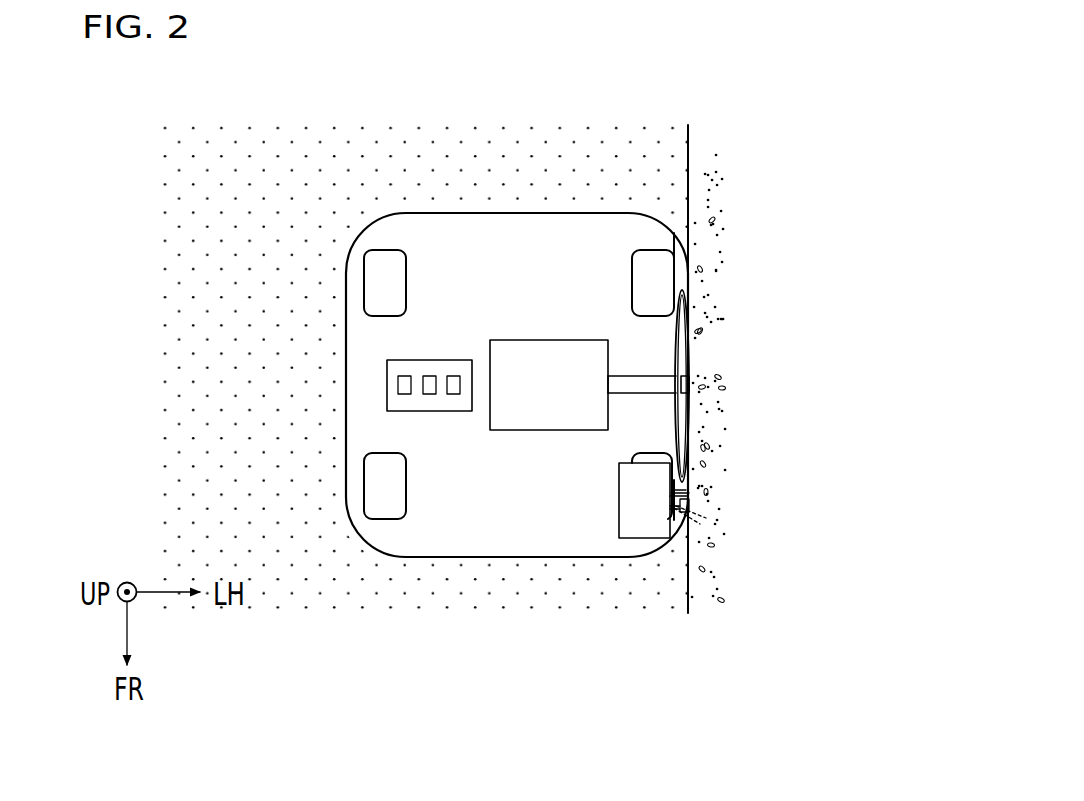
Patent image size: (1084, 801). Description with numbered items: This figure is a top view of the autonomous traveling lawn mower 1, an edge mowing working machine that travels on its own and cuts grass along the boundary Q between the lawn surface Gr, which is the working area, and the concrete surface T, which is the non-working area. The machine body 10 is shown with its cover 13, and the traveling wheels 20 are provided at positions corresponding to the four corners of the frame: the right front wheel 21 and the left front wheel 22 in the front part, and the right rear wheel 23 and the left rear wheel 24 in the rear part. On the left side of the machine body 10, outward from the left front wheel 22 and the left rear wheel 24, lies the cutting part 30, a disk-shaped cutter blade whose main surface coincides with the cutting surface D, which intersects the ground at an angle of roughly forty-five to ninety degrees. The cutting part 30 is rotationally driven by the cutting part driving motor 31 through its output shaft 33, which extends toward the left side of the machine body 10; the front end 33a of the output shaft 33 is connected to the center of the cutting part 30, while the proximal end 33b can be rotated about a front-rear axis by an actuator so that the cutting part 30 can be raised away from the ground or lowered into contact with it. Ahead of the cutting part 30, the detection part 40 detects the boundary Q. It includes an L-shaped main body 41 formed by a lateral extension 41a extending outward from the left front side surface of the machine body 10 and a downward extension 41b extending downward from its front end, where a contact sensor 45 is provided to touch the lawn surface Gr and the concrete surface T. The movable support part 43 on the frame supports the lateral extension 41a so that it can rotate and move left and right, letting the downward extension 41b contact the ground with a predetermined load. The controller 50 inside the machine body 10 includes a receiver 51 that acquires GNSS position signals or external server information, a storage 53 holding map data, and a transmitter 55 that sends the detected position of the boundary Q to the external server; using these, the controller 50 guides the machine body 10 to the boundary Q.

The autonomous traveling lawn mower 1 is at (322, 223).
The machine body 10 is at (668, 212).
The cover 13 is at (482, 213).
The traveling wheels 20 is at (536, 423).
The right front wheel 21 is at (378, 491).
The left front wheel 22 is at (676, 522).
The right rear wheel 23 is at (378, 292).
The left rear wheel 24 is at (680, 268).
The cutting part 30 is at (694, 340).
The cutting part driving motor 31 is at (548, 340).
The output shaft 33 is at (690, 394).
The front end 33a is at (690, 383).
The proximal end 33b is at (608, 381).
The detection part 40 is at (695, 504).
The main body 41 is at (681, 498).
The lateral extension 41a is at (681, 494).
The downward extension 41b is at (692, 511).
The movable support part 43 is at (652, 539).
The contact sensor 45 is at (690, 516).
The controller 50 is at (376, 398).
The receiver 51 is at (406, 392).
The storage 53 is at (428, 396).
The transmitter 55 is at (452, 376).
The cutting surface D is at (687, 350).
The boundary Q is at (691, 160).
The concrete surface T is at (840, 245).
The lawn surface Gr is at (180, 257).